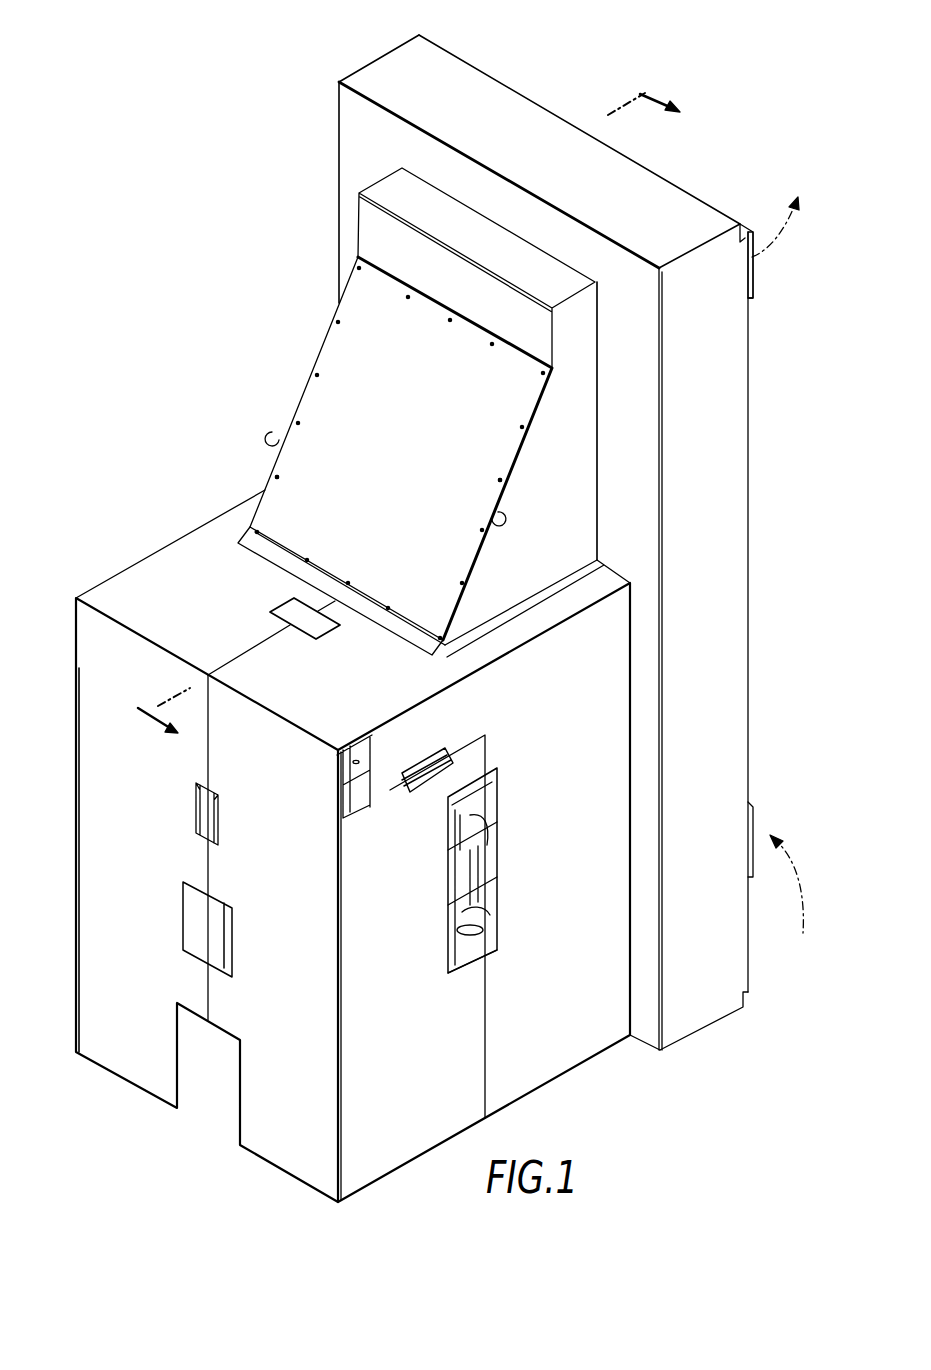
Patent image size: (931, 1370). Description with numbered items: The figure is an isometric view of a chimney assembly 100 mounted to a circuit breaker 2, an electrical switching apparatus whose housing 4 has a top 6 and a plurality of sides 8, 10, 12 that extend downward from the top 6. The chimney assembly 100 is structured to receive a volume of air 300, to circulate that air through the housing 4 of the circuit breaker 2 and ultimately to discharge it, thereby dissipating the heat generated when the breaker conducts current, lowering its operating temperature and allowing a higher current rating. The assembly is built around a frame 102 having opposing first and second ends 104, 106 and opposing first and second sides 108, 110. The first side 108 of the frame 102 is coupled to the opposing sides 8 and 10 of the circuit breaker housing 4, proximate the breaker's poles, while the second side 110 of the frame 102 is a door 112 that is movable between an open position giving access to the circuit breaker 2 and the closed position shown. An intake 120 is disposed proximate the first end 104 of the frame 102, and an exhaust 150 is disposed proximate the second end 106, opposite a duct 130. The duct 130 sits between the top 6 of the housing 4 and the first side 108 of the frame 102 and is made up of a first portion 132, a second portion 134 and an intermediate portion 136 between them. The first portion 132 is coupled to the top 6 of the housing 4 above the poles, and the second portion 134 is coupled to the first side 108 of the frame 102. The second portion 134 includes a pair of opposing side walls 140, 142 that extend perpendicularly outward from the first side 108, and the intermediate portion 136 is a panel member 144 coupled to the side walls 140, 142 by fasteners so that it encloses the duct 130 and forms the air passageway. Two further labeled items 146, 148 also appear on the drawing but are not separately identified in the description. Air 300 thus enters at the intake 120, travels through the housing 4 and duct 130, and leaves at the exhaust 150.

The circuit breaker 2 is at (162, 1176).
The housing 4 is at (108, 560).
The top 6 is at (330, 692).
The side 8 is at (78, 738).
The side 10 is at (538, 904).
The side 12 is at (271, 926).
The chimney assembly 100 is at (243, 222).
The frame 102 is at (728, 547).
The first end 104 is at (640, 1053).
The second end 106 is at (333, 84).
The first side 108 is at (388, 126).
The second side 110 is at (481, 70).
The door 112 is at (757, 450).
The intake 120 is at (758, 800).
The duct 130 is at (470, 411).
The first portion 132 is at (511, 636).
The second portion 134 is at (627, 390).
The intermediate portion 136 is at (551, 522).
The side wall 140 is at (356, 208).
The side wall 142 is at (540, 466).
The panel member 144 is at (383, 466).
The fastener 146 is at (279, 440).
The fastener 148 is at (498, 512).
The exhaust 150 is at (752, 212).
The volume of air 300 is at (785, 238).